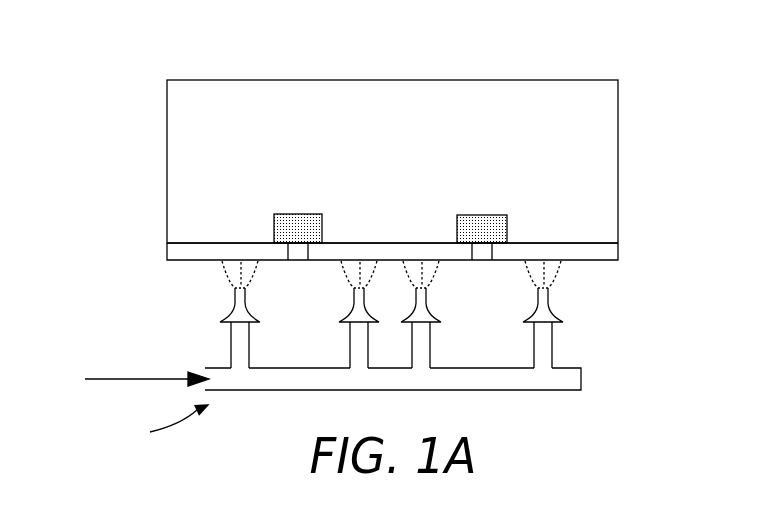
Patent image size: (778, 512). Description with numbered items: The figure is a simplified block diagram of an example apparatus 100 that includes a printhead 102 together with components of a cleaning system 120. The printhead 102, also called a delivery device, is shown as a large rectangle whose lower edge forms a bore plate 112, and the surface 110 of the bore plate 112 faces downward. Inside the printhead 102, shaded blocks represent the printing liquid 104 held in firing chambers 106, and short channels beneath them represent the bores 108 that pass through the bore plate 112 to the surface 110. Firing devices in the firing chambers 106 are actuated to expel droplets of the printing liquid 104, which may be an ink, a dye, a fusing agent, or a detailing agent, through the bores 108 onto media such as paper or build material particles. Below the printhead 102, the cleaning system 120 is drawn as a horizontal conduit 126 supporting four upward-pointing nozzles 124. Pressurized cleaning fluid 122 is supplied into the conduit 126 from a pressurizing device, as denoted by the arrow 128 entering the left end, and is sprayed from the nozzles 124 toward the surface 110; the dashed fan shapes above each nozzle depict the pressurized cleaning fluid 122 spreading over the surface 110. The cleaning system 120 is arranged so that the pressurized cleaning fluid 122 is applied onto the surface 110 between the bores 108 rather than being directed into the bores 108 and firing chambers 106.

The apparatus 100 is at (338, 21).
The printhead 102 is at (463, 80).
The printing liquid 104 is at (276, 224).
The firing chambers 106 is at (309, 213).
The bores 108 is at (310, 252).
The surface 110 is at (180, 261).
The bore plate 112 is at (167, 252).
The cleaning system 120 is at (155, 424).
The pressurized cleaning fluid 122 is at (549, 281).
The nozzles 124 is at (553, 308).
The conduit 126 is at (581, 377).
The arrow 128 is at (112, 379).